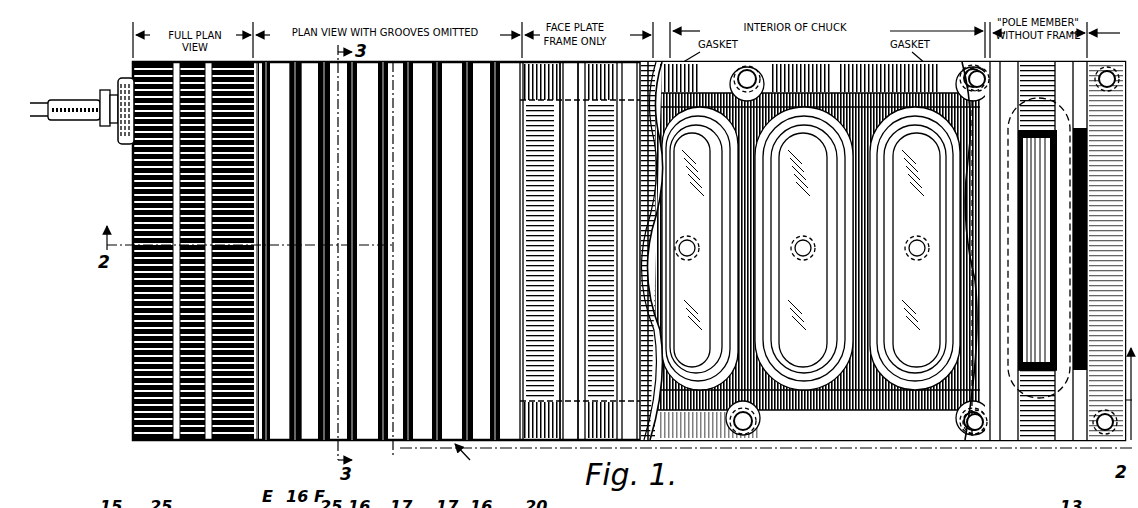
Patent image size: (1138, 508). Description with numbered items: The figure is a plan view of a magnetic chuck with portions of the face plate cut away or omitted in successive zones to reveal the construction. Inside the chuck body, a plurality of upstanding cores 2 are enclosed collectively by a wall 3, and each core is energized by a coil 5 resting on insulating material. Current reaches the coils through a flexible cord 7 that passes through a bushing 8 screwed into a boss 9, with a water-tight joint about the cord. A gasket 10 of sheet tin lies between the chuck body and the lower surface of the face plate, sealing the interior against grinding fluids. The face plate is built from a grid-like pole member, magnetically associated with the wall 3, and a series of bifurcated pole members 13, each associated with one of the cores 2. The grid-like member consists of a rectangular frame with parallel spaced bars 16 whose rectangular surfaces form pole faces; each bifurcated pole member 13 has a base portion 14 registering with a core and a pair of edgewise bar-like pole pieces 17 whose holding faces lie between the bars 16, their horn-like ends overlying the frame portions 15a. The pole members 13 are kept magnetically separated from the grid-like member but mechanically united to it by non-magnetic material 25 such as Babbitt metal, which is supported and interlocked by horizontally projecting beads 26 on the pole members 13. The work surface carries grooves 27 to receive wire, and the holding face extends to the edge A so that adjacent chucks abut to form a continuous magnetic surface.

The upstanding cores 2 is at (811, 248).
The wall 3 is at (840, 465).
The coil 5 is at (799, 382).
The flexible cord 7 is at (68, 124).
The bushing 8 is at (104, 128).
The boss 9 is at (126, 146).
The gasket 10 is at (690, 100).
The bifurcated pole member 13 is at (1055, 251).
The base portion 14 is at (1037, 383).
The portions of the frame 15a is at (602, 388).
The parallel spaced bars 16 is at (610, 300).
The bar-like pole pieces 17 is at (450, 47).
The non-magnetic material 25 is at (470, 218).
The horizontally projecting beads 26 is at (968, 395).
The grooves 27 is at (133, 420).
The edge A is at (475, 472).